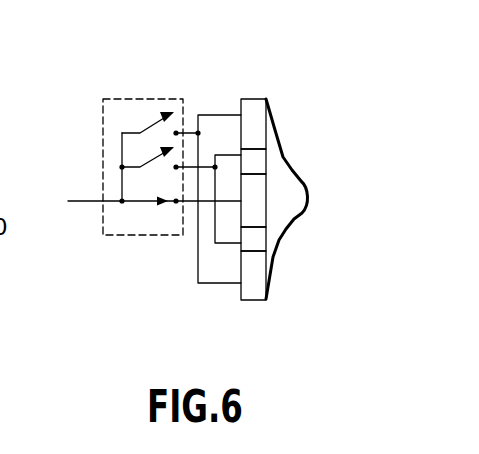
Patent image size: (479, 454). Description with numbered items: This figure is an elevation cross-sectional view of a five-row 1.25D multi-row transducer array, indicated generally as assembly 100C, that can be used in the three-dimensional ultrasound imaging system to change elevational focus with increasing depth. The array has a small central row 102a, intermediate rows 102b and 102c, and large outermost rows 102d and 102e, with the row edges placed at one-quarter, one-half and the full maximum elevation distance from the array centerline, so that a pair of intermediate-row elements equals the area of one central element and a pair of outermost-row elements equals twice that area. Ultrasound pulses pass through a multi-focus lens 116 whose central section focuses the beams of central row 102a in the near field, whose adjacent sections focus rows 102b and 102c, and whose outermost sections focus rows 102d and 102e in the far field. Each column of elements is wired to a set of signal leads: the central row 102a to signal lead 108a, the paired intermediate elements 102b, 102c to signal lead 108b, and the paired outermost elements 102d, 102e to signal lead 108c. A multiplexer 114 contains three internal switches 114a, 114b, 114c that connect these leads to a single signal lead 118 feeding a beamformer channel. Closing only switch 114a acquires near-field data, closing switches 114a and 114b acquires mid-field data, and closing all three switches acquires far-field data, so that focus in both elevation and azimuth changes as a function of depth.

The switching assembly 100C is at (296, 70).
The multiplexer 114 is at (130, 98).
The multiplexer switch 114a is at (140, 202).
The multiplexer switch 114b is at (155, 160).
The multiplexer switch 114c is at (155, 122).
The signal lead 118 is at (77, 202).
The signal lead 108a is at (210, 199).
The signal lead 108b is at (203, 165).
The signal lead 108c is at (188, 130).
The central row 102a is at (250, 208).
The intermediate row 102b is at (257, 243).
The intermediate row 102c is at (260, 150).
The outermost row 102d is at (250, 292).
The outermost row 102e is at (253, 107).
The multi-focus lens 116 is at (307, 187).